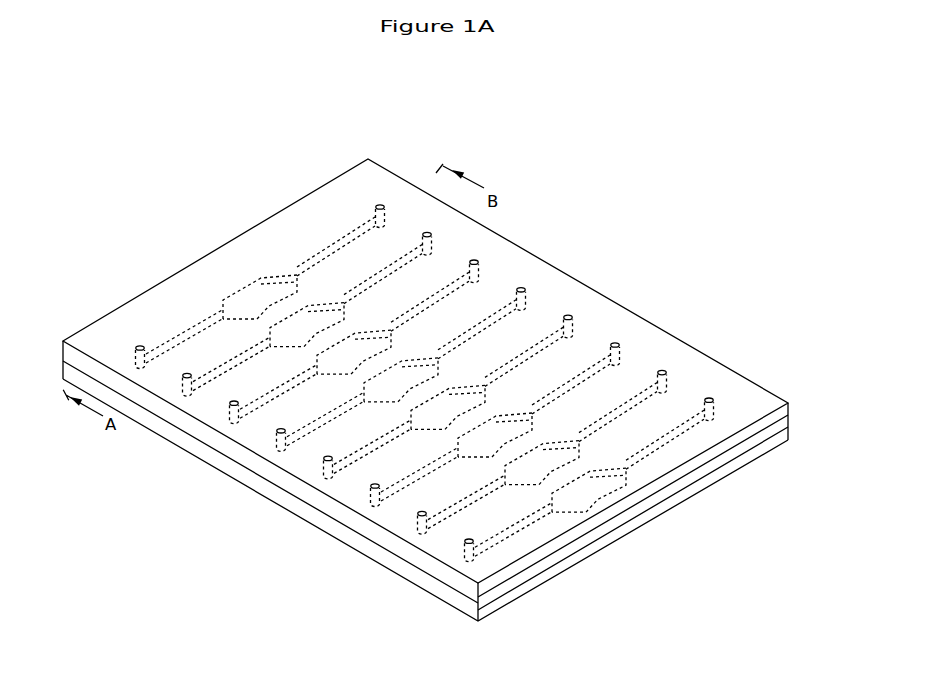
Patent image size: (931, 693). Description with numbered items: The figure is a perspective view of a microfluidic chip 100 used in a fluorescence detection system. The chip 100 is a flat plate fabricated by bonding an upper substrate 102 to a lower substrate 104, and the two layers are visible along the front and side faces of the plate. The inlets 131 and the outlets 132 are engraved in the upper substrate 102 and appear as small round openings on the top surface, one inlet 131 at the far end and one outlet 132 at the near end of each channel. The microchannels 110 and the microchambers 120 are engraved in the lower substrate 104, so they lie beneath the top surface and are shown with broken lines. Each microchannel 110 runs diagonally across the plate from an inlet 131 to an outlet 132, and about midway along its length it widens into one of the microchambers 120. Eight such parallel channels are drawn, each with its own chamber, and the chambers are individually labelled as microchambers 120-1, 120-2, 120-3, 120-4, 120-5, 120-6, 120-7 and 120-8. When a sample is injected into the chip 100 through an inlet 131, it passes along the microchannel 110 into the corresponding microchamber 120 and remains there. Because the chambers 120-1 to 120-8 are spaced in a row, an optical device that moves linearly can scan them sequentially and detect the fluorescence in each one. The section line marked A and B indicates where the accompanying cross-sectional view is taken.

The microfluidic chip 100 is at (611, 157).
The upper substrate 102 is at (787, 412).
The lower substrate 104 is at (784, 432).
The microchannel 110 is at (333, 247).
The microchambers 120 is at (112, 502).
The microchamber 120-1 is at (258, 306).
The microchamber 120-2 is at (312, 328).
The microchamber 120-3 is at (350, 360).
The microchamber 120-4 is at (392, 388).
The microchamber 120-5 is at (437, 412).
The microchamber 120-6 is at (490, 437).
The microchamber 120-7 is at (535, 468).
The microchamber 120-8 is at (581, 497).
The inlet 131 is at (379, 205).
The outlet 132 is at (137, 347).